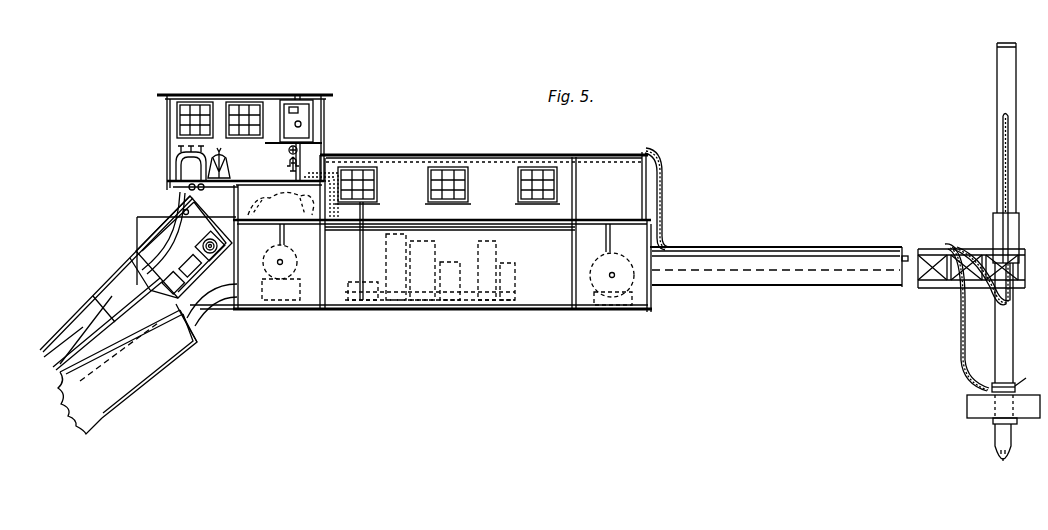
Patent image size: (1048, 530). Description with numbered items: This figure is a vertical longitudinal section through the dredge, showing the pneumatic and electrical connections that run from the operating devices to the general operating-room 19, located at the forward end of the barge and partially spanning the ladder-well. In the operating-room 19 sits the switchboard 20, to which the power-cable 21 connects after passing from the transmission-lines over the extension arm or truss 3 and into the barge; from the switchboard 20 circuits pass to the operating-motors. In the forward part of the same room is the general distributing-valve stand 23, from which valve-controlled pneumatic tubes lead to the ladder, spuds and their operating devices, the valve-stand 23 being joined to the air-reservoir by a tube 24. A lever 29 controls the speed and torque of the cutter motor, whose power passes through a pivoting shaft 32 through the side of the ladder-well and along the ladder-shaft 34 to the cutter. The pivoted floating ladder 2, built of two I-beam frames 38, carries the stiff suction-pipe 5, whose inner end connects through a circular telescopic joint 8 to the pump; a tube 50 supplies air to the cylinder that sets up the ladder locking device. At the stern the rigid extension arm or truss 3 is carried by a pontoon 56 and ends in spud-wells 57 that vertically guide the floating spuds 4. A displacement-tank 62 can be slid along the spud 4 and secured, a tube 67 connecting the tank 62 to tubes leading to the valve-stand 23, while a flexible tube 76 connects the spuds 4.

The floating ladder 2 is at (181, 320).
The extension arm or truss 3 is at (776, 270).
The floating spud 4 is at (1008, 340).
The suction-pipe 5 is at (127, 372).
The circular telescopic joint 8 is at (228, 294).
The operating-room 19 is at (245, 142).
The switchboard 20 is at (313, 123).
The power-cable 21 is at (372, 156).
The distributing-valve stand 23 is at (174, 161).
The tube 24 is at (186, 187).
The lever 29 is at (228, 160).
The pivoting shaft 32 is at (172, 238).
The ladder-shaft 34 is at (93, 318).
The I-beam frame 38 is at (238, 253).
The tube 50 is at (186, 196).
The pontoon 56 is at (858, 283).
The spud-well 57 is at (1019, 226).
The displacement-tank 62 is at (978, 405).
The tube 67 is at (963, 331).
The flexible tube 76 is at (1000, 158).